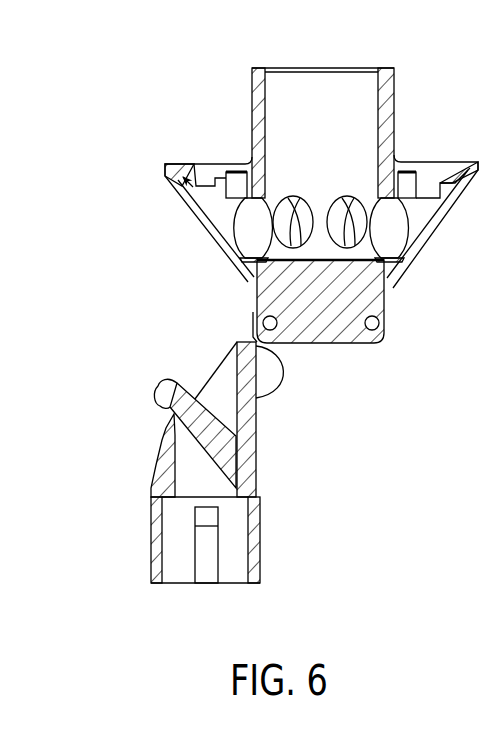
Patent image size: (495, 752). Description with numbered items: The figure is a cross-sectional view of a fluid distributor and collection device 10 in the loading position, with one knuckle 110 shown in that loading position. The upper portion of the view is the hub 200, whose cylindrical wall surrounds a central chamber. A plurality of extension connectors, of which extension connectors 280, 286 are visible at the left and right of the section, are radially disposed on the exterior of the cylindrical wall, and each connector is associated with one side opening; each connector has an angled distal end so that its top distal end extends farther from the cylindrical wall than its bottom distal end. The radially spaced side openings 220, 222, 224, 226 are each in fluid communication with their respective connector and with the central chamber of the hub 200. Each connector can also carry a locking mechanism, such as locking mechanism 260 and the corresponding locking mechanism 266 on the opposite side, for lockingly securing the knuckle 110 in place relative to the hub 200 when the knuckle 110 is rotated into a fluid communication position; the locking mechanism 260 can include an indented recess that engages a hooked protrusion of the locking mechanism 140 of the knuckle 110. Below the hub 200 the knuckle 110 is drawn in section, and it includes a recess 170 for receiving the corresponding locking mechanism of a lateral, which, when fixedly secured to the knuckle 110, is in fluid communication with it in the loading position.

The fluid distributor and collection device 10 is at (271, 349).
The knuckle 110 is at (242, 481).
The locking mechanism of the knuckle 140 is at (162, 388).
The recess 170 is at (207, 577).
The hub 200 is at (323, 133).
The side opening 220 is at (268, 200).
The side opening 222 is at (289, 247).
The side opening 224 is at (343, 247).
The side opening 226 is at (373, 200).
The locking mechanism 260 is at (236, 172).
The second catch 266 is at (409, 172).
The extension connector 280 is at (166, 162).
The extension connector 286 is at (458, 165).